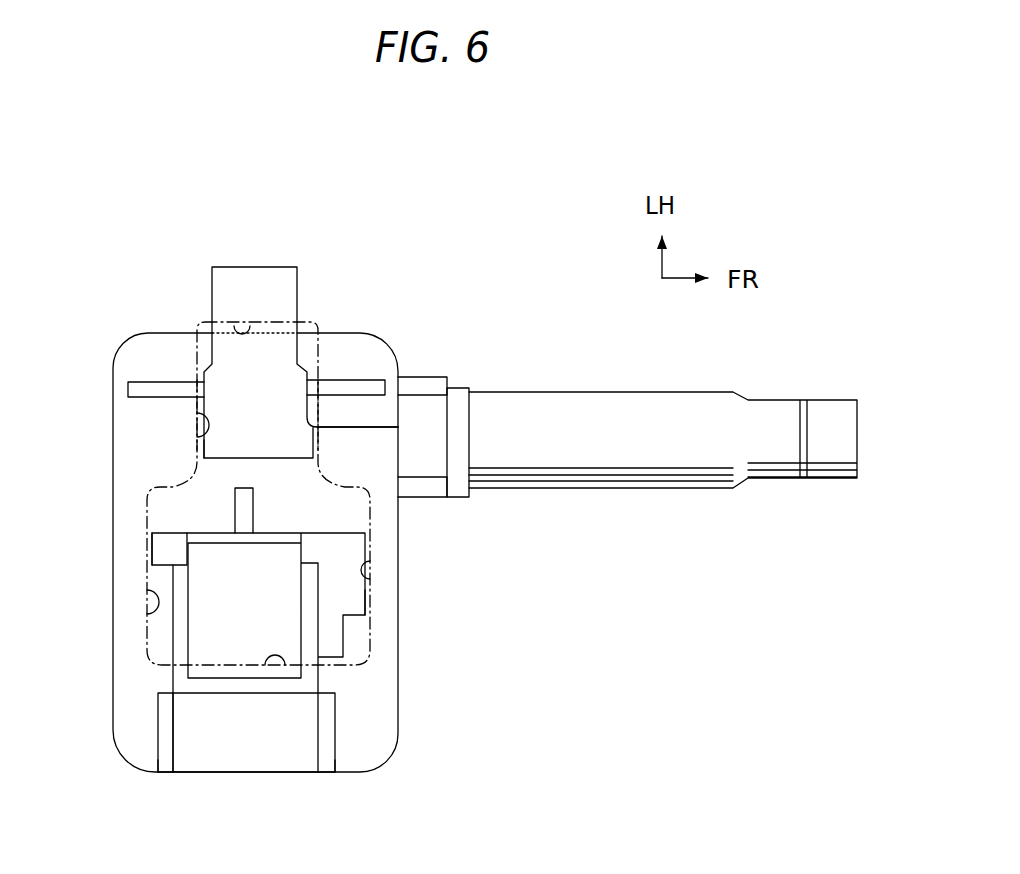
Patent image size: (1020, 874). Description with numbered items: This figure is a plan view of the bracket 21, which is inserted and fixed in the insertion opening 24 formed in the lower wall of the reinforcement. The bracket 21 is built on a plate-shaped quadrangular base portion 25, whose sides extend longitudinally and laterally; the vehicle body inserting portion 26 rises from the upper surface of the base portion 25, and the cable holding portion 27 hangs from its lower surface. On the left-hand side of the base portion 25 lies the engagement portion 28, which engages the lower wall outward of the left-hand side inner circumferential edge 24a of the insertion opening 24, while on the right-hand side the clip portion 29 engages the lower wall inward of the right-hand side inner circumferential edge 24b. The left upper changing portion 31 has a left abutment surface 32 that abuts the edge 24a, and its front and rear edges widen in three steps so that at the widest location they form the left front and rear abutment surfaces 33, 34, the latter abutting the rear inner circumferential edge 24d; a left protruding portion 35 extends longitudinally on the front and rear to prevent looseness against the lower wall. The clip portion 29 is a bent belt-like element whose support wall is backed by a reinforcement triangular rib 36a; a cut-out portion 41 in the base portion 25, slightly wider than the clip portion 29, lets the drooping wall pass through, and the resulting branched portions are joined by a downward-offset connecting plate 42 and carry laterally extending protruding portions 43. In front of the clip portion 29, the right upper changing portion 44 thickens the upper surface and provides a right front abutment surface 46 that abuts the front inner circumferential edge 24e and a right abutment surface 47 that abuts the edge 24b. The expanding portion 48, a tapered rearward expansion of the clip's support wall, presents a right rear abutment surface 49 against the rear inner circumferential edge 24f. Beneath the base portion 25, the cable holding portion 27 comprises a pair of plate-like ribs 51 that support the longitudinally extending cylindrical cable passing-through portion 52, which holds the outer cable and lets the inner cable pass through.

The bracket 21 is at (284, 494).
The insertion opening 24 is at (252, 522).
The left-hand side inner circumferential edge 24a is at (233, 322).
The right-hand side inner circumferential edge 24b is at (312, 408).
The rear inner circumferential edge 24d is at (197, 437).
The front inner circumferential edge 24e is at (362, 569).
The rear inner circumferential edge 24f is at (147, 613).
The base portion 25 is at (122, 343).
The vehicle body inserting portion 26 is at (259, 465).
The cable holding portion 27 is at (463, 500).
The engagement portion 28 is at (225, 264).
The clip portion 29 is at (172, 643).
The left upper changing portion 31 is at (305, 360).
The left abutment surface 32 is at (278, 328).
The left front abutment surface 33 is at (317, 448).
The left rear abutment surface 34 is at (200, 449).
The left protruding portion 35 is at (128, 389).
The reinforcement triangular rib 36a is at (248, 512).
The cut-out portion 41 is at (178, 750).
The connecting plate 42 is at (248, 760).
The protruding portions 43 is at (163, 760).
The right upper changing portion 44 is at (376, 616).
The right front abutment surface 46 is at (368, 598).
The right abutment surface 47 is at (337, 660).
The expanding portion 48 is at (170, 540).
The right rear abutment surface 49 is at (152, 541).
The ribs 51 is at (430, 378).
The cable passing-through portion 52 is at (650, 457).